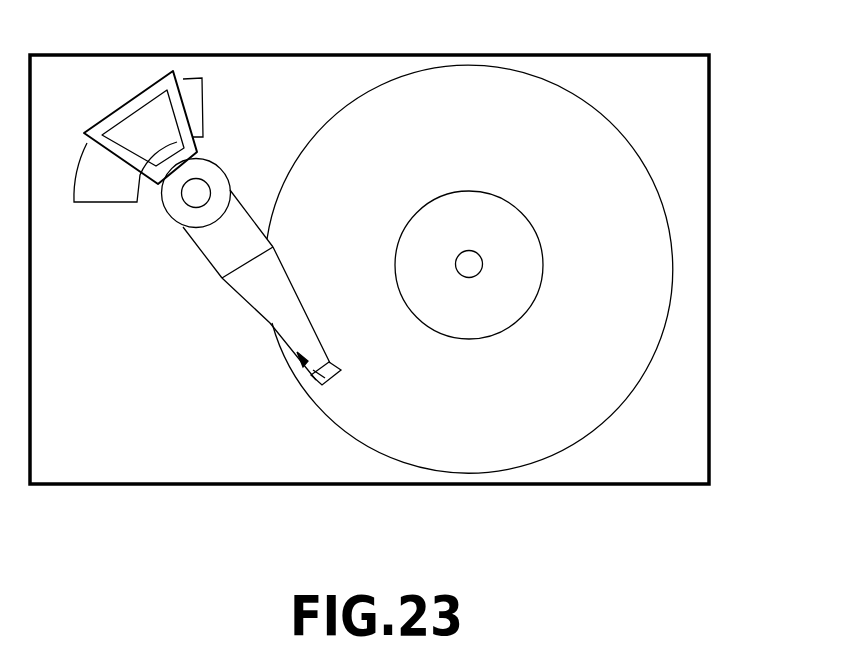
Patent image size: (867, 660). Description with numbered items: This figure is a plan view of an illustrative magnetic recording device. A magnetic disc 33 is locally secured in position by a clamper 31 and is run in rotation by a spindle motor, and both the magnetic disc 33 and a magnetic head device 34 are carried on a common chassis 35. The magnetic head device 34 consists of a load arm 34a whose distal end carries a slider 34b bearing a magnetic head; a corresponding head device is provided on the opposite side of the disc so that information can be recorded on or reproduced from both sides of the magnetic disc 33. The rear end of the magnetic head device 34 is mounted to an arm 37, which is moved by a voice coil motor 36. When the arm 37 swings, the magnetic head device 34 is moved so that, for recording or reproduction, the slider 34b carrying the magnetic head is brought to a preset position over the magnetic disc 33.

The clamper 31 is at (530, 257).
The magnetic disc 33 is at (631, 352).
The magnetic head device 34 is at (222, 308).
The load arm 34a is at (272, 318).
The slider 34b is at (320, 383).
The common chassis 35 is at (243, 91).
The voice coil motor 36 is at (135, 125).
The arm 37 is at (173, 203).